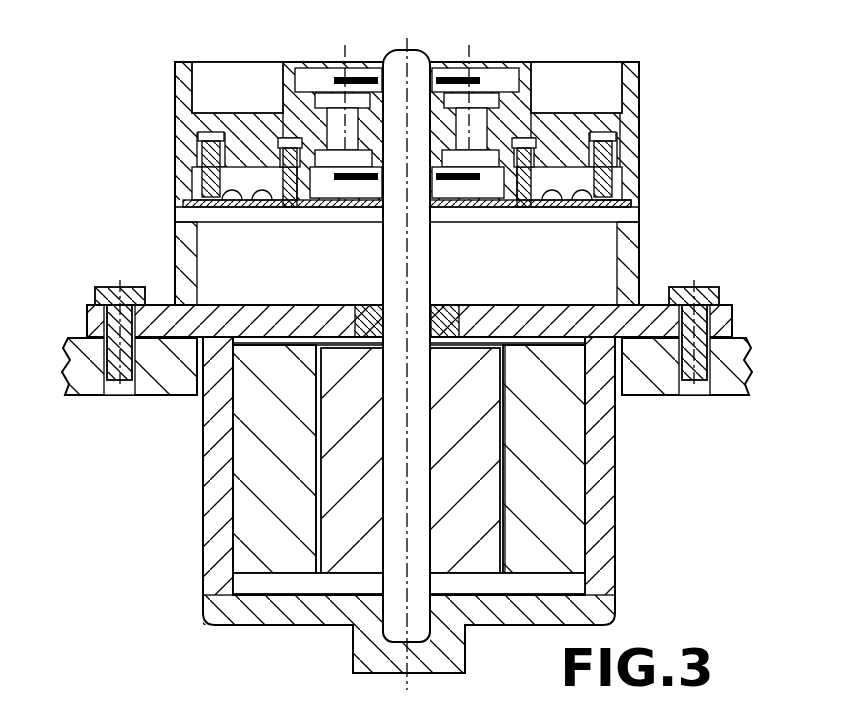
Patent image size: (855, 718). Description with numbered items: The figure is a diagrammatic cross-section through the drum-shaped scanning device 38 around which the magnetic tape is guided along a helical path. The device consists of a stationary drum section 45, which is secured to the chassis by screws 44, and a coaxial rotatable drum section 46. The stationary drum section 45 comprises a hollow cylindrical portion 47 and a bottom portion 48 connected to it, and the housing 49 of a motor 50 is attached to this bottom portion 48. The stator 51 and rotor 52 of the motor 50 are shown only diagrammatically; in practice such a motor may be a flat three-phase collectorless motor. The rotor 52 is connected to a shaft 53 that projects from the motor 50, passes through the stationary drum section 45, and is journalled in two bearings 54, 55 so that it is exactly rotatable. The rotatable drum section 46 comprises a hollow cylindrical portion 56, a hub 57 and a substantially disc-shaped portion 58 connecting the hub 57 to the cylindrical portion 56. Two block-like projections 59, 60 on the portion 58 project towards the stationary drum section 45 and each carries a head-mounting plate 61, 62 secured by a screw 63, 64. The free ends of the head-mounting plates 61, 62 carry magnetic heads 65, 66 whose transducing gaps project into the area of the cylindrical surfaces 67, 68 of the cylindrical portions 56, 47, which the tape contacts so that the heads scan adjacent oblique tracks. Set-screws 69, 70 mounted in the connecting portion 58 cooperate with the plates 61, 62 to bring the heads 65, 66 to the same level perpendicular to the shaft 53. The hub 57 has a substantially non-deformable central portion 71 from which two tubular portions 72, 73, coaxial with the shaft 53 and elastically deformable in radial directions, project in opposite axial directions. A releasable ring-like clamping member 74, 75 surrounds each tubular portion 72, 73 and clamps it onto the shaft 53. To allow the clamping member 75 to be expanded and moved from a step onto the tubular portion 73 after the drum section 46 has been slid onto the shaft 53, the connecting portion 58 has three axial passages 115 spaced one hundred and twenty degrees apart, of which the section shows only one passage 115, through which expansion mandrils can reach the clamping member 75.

The drum-shaped scanning device 38 is at (682, 168).
The mounting bolts 44 is at (106, 287).
The stationary drum section 45 is at (650, 259).
The rotatable drum section 46 is at (641, 128).
The hollow cylindrical portion 47 is at (190, 270).
The bottom portion 48 is at (531, 308).
The housing 49 is at (604, 547).
The motor 50 is at (622, 488).
The stator 51 is at (566, 449).
The rotor 52 is at (487, 577).
The shaft 53 is at (433, 291).
The bearing 54 is at (379, 304).
The bearing 55 is at (365, 649).
The hollow cylindrical portion 56 is at (641, 74).
The hub 57 is at (437, 94).
The disc-shaped portion 58 is at (561, 126).
The block-like projection 59 is at (257, 215).
The block-like projection 60 is at (556, 215).
The head-mounting plate 61 is at (324, 216).
The head-mounting plate 62 is at (494, 215).
The screw 63 is at (289, 222).
The screw 64 is at (520, 218).
The magnetic head 65 is at (178, 203).
The magnetic head 66 is at (629, 203).
The cylindrical surface 67 is at (183, 120).
The cylindrical surface 68 is at (176, 235).
The set-screw 69 is at (231, 212).
The set-screw 70 is at (584, 213).
The central portion 71 is at (443, 133).
The tubular portion 72 is at (371, 66).
The tubular portion 73 is at (370, 216).
The clamping member 74 is at (334, 68).
The clamping member 75 is at (451, 190).
The passage 115 is at (333, 122).